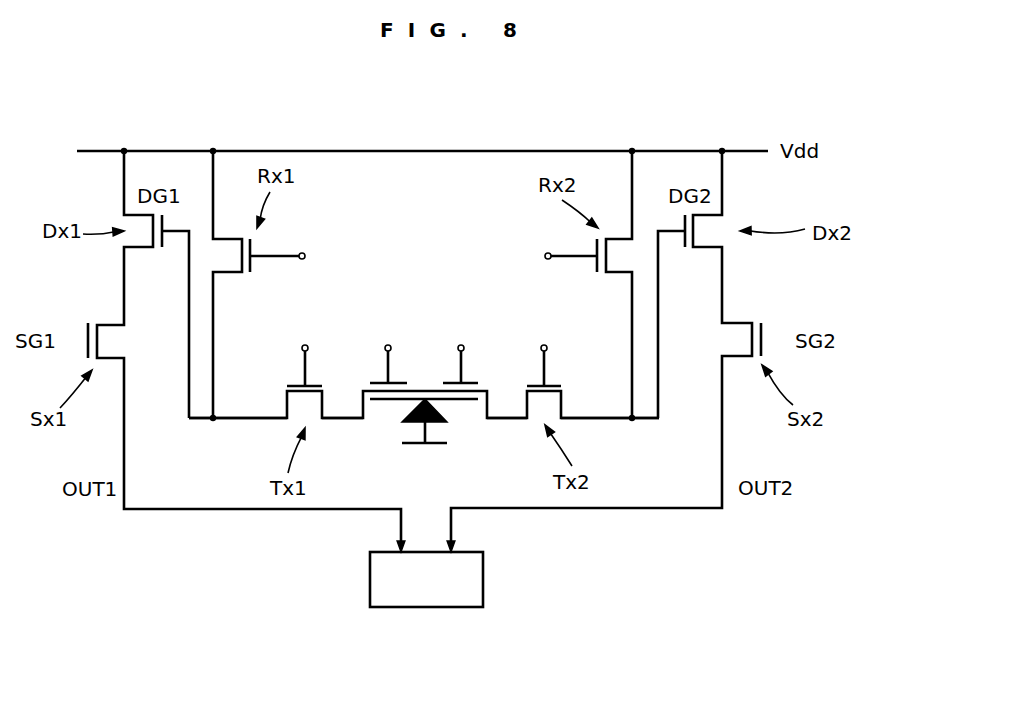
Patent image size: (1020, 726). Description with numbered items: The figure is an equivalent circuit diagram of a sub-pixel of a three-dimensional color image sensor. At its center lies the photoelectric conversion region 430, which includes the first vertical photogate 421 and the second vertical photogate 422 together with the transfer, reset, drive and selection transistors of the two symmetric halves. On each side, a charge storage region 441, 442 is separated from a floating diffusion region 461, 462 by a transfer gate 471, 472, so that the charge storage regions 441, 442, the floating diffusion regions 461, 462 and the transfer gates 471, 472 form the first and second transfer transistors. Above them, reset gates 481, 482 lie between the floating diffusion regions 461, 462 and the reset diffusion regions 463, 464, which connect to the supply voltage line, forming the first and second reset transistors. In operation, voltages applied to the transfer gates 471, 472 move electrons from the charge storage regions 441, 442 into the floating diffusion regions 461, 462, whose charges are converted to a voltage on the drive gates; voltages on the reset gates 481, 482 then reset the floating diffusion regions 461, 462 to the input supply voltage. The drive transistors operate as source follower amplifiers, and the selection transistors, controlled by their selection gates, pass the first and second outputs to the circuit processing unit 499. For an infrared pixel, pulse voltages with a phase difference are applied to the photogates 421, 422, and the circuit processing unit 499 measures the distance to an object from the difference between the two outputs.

The reset diffusion region 463 is at (216, 134).
The reset diffusion region 464 is at (634, 134).
The reset gate 481 is at (298, 256).
The reset gate 482 is at (548, 256).
The transfer gate 471 is at (306, 350).
The first vertical photogate 421 is at (389, 349).
The second vertical photogate 422 is at (462, 349).
The transfer gate 472 is at (546, 350).
The floating diffusion region 461 is at (238, 430).
The floating diffusion region 462 is at (610, 430).
The charge storage region 441 is at (343, 432).
The charge storage region 442 is at (509, 432).
The photoelectric conversion region 430 is at (451, 434).
The circuit processing unit 499 is at (427, 607).